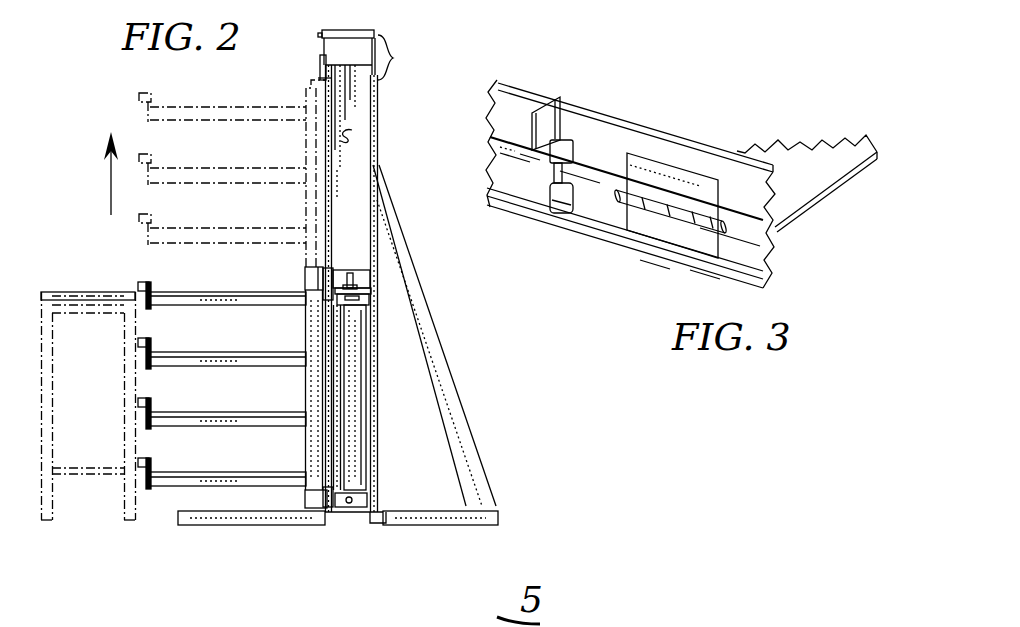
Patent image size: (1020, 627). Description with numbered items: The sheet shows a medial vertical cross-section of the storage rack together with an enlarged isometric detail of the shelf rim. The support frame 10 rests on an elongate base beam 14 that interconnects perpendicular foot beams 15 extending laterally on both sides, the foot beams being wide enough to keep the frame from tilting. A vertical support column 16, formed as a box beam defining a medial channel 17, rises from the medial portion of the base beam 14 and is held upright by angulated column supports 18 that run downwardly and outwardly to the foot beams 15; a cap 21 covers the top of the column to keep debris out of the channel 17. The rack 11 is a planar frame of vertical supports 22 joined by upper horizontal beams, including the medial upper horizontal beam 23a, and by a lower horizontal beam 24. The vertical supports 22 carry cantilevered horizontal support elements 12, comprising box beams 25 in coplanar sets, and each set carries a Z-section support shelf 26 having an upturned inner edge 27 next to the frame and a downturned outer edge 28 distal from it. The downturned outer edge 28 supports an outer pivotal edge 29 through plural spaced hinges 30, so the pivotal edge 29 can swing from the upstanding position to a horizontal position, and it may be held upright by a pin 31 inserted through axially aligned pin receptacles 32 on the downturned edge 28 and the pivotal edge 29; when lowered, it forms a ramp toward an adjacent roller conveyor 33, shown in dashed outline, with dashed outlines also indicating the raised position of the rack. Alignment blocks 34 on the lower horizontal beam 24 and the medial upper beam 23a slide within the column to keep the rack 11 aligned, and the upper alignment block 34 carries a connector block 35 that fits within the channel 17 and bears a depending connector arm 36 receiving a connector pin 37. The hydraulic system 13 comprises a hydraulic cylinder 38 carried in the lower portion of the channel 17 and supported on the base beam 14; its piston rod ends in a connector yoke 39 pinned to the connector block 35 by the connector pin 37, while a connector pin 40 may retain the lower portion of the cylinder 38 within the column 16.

In FIG. 2, the support frame 10 is at (314, 127).
In FIG. 2, the rack 11 is at (298, 375).
In FIG. 2, the horizontal support elements 12 is at (190, 368).
In FIG. 3, the horizontal support elements 12 is at (871, 138).
In FIG. 2, the hydraulic system 13 is at (352, 376).
In FIG. 2, the elongate base beam 14 is at (383, 525).
In FIG. 2, the foot beams 15 is at (225, 522).
In FIG. 2, the vertical support column 16 is at (370, 474).
In FIG. 2, the medial channel 17 is at (352, 130).
In FIG. 2, the column supports 18 is at (447, 390).
In FIG. 2, the cap 21 is at (343, 31).
In FIG. 2, the vertical supports 22 is at (322, 437).
In FIG. 2, the medial upper horizontal beam 23a is at (314, 270).
In FIG. 2, the lower horizontal beam 24 is at (305, 498).
In FIG. 2, the box beams 25 is at (187, 425).
In FIG. 2, the support shelf 26 is at (232, 350).
In FIG. 3, the support shelf 26 is at (822, 158).
In FIG. 2, the upturned inner edge 27 is at (304, 290).
In FIG. 2, the downturned outer edge 28 is at (147, 487).
In FIG. 3, the downturned outer edge 28 is at (608, 222).
In FIG. 2, the outer pivotal edge 29 is at (151, 342).
In FIG. 3, the outer pivotal edge 29 is at (515, 116).
In FIG. 3, the hinges 30 is at (690, 190).
In FIG. 3, the pin 31 is at (562, 120).
In FIG. 3, the pin receptacles 32 is at (562, 198).
In FIG. 2, the roller conveyor 33 is at (95, 284).
In FIG. 2, the alignment block 34 is at (330, 272).
In FIG. 2, the connector block 35 is at (336, 270).
In FIG. 2, the connector arm 36 is at (354, 278).
In FIG. 2, the connector pin 37 is at (370, 292).
In FIG. 2, the hydraulic cylinder 38 is at (350, 465).
In FIG. 2, the connector yoke 39 is at (326, 310).
In FIG. 2, the connector pin 40 is at (350, 505).